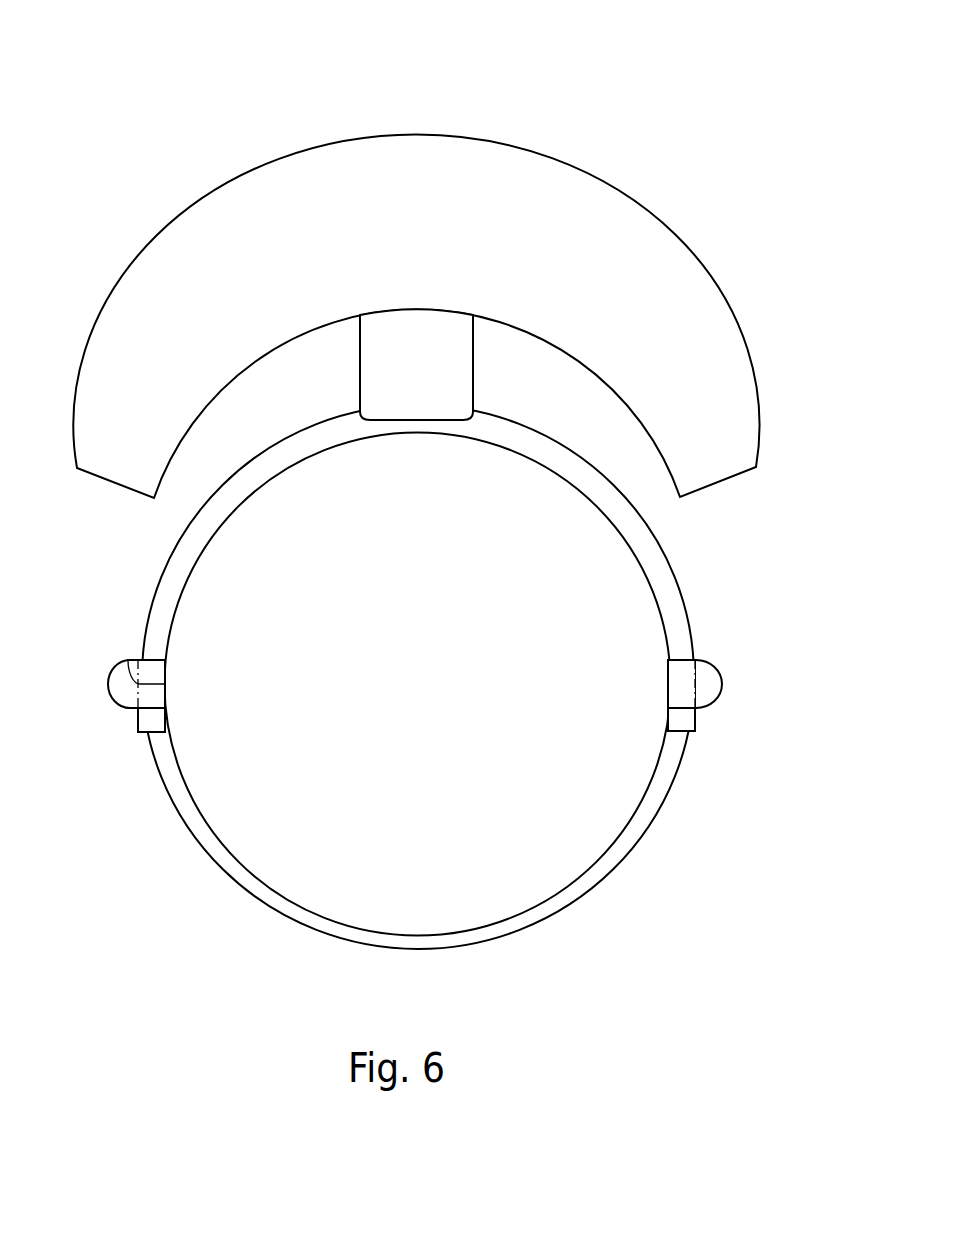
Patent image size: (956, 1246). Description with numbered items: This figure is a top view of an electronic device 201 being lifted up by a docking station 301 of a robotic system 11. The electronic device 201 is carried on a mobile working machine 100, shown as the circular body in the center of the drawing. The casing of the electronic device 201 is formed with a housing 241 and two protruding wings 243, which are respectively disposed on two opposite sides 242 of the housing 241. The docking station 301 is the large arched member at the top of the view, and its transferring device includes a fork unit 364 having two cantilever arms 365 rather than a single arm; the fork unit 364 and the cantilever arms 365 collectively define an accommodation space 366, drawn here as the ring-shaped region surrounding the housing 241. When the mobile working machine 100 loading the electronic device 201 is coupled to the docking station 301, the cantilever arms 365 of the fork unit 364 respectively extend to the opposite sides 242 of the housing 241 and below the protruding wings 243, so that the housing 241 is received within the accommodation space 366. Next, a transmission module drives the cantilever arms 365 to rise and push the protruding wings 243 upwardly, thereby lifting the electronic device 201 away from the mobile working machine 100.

The robotic system 11 is at (99, 91).
The mobile working machine 100 is at (256, 902).
The electronic device 201 is at (800, 668).
The housing 241 is at (647, 752).
The opposite sides 242 is at (128, 662).
The protruding wings 243 is at (116, 688).
The docking station 301 is at (588, 180).
The fork unit 364 is at (450, 380).
The cantilever arms 365 is at (156, 590).
The accommodation space 366 is at (643, 554).